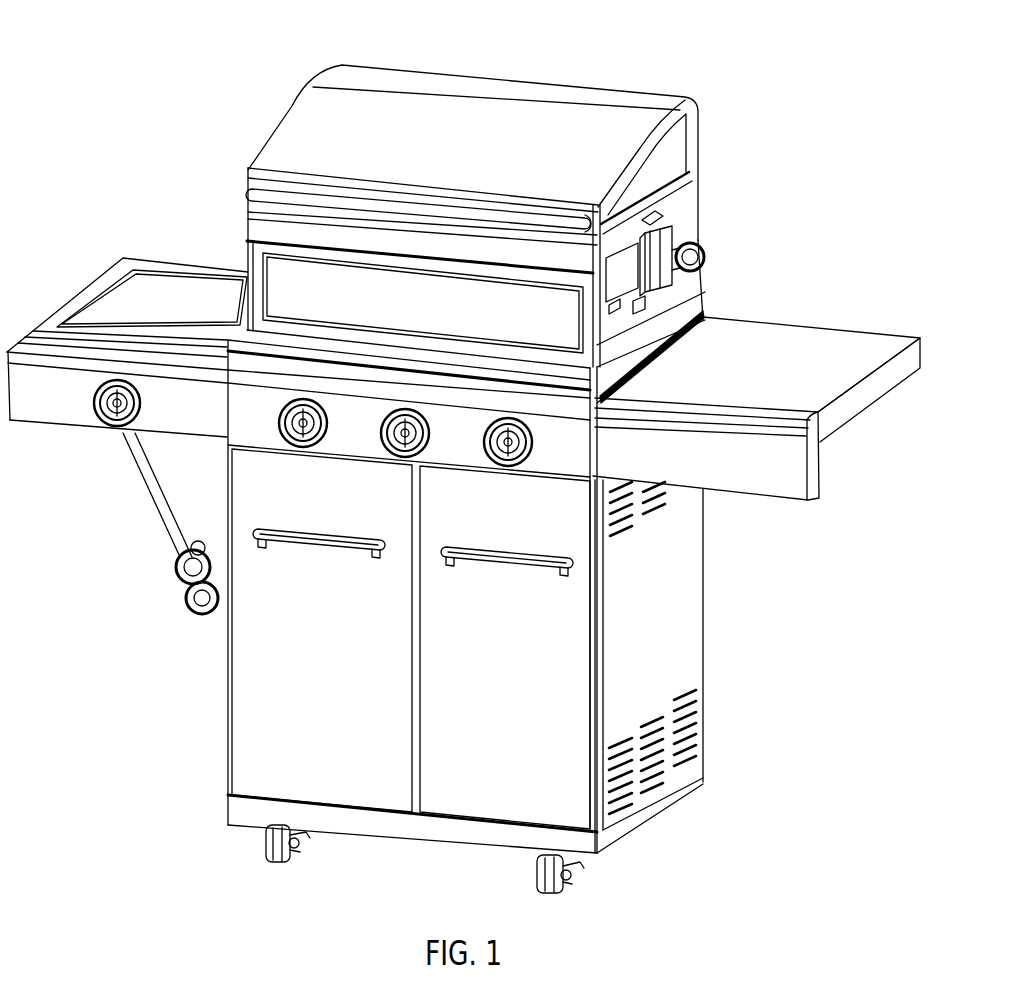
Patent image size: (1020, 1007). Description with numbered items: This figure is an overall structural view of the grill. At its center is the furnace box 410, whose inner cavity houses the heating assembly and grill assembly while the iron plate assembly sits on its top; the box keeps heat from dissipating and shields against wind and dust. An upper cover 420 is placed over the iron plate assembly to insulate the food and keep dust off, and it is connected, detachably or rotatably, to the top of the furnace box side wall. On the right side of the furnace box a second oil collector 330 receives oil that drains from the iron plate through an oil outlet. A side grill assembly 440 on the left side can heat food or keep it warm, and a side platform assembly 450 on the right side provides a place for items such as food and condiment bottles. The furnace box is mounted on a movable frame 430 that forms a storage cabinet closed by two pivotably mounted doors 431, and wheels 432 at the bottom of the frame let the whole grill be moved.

The upper cover 420 is at (318, 133).
The furnace box 410 is at (700, 190).
The second oil collector 330 is at (713, 233).
The side platform assembly 450 is at (733, 347).
The side grill assembly 440 is at (180, 303).
The movable frame 430 is at (650, 643).
The doors 431 is at (263, 670).
The wheels 432 is at (260, 850).